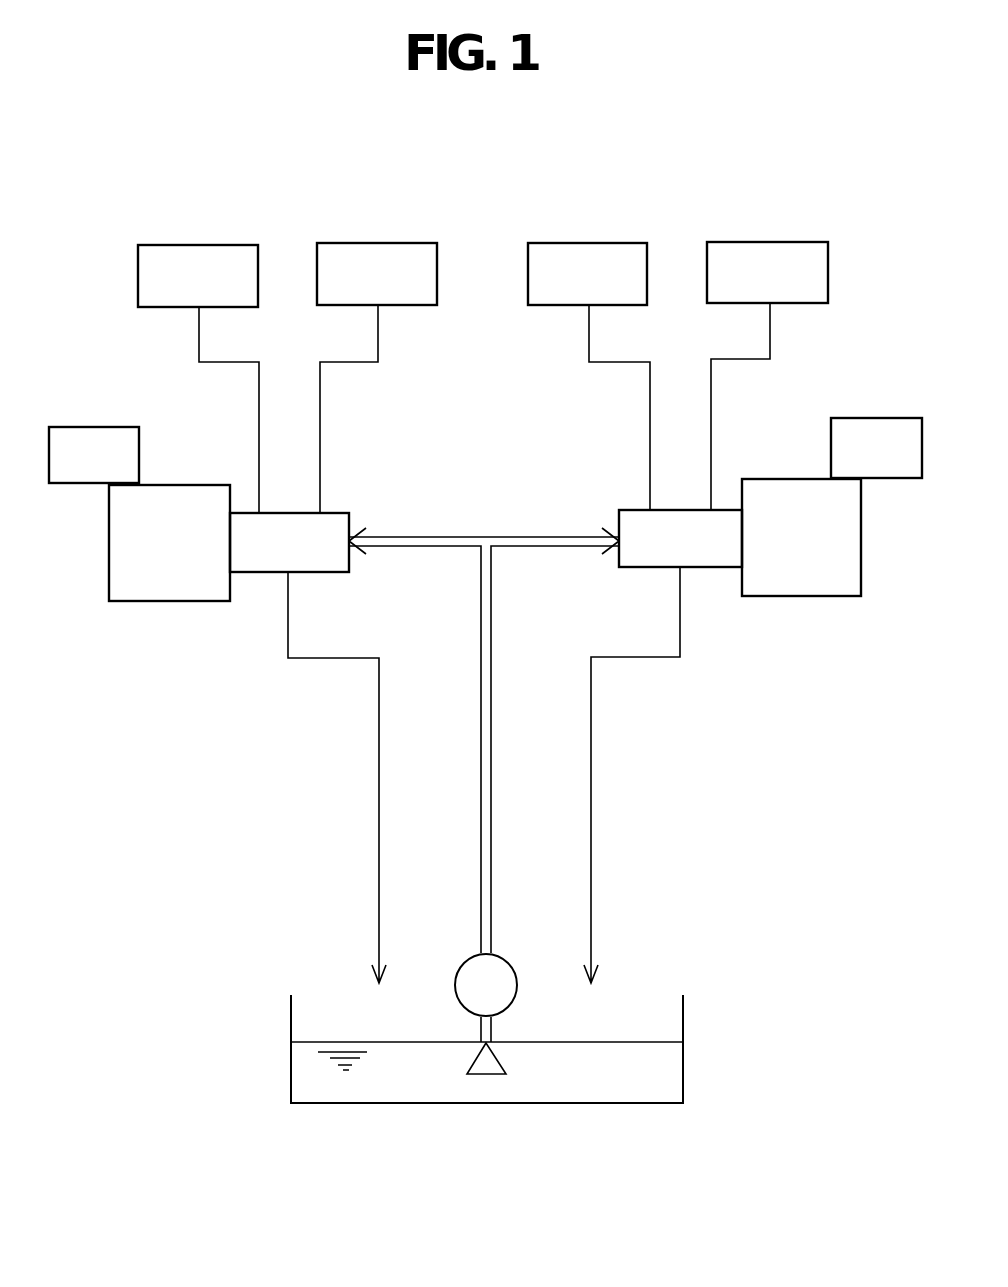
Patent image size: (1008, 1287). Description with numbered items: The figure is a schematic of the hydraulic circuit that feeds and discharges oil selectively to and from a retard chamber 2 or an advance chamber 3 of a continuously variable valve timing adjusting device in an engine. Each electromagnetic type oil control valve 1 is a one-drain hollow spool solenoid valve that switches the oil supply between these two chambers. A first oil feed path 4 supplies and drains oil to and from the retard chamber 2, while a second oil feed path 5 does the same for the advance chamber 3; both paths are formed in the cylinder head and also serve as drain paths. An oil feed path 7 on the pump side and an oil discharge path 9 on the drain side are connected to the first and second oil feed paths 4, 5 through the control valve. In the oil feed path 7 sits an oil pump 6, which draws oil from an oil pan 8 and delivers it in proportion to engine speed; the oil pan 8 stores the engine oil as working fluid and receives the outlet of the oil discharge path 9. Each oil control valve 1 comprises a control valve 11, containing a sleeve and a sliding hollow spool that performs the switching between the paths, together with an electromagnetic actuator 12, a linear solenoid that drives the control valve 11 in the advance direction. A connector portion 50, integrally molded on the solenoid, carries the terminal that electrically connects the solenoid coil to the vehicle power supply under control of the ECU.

The electromagnetic type oil control valve 1 is at (366, 490).
The retard chamber 2 is at (368, 243).
The advance chamber 3 is at (196, 245).
The first oil feed path 4 is at (382, 363).
The second oil feed path 5 is at (199, 364).
The oil pump 6 is at (505, 963).
The oil feed path 7 is at (492, 805).
The oil pan 8 is at (683, 1028).
The oil discharge path 9 is at (378, 820).
The control valve 11 is at (338, 563).
The electromagnetic actuator 12 is at (125, 592).
The connector portion 50 is at (88, 427).